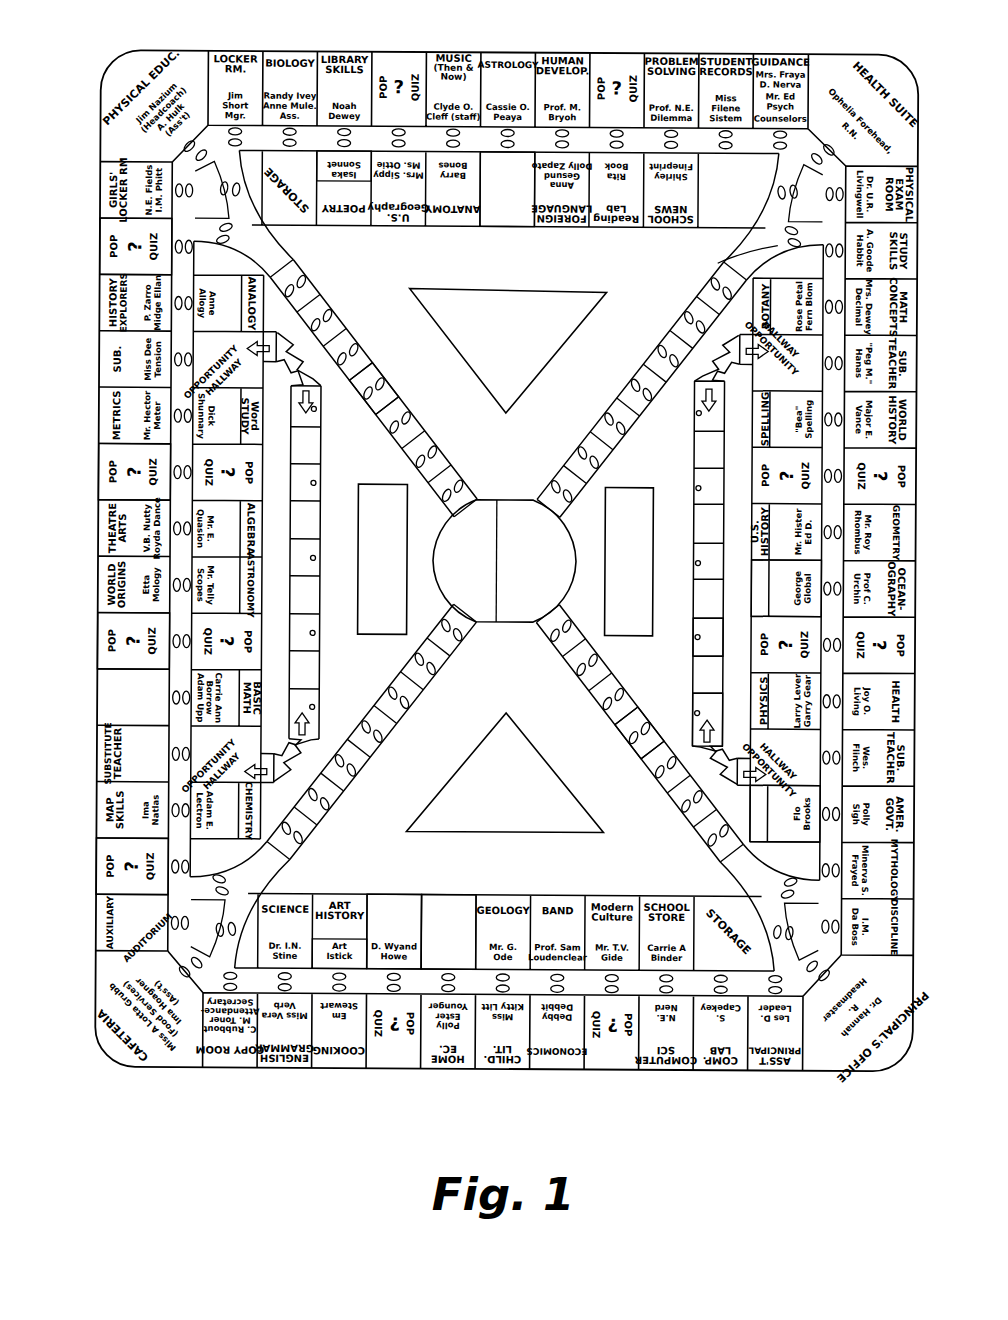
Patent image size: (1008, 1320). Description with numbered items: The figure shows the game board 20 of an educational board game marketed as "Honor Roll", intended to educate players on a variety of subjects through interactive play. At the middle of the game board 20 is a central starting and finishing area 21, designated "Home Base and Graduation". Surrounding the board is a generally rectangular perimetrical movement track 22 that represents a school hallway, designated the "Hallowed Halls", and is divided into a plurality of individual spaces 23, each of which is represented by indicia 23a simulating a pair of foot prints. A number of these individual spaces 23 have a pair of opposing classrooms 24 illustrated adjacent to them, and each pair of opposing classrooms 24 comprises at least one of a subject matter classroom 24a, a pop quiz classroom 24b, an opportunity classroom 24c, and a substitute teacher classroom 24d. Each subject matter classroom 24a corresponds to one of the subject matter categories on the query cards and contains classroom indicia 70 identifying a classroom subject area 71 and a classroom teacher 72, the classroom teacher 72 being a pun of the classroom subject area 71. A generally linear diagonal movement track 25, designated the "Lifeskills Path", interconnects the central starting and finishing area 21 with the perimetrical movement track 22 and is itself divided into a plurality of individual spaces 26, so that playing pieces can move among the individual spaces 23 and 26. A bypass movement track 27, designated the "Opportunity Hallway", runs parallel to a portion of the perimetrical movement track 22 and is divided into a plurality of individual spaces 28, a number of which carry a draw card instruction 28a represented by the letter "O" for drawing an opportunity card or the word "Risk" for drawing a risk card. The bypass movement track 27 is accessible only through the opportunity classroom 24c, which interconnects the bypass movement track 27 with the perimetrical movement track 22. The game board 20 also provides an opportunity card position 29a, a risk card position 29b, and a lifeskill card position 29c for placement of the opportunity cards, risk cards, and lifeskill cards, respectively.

The game board 20 is at (706, 48).
The central starting and finishing area 21 is at (514, 533).
The perimetrical movement track 22 is at (372, 958).
The individual spaces 23 is at (356, 152).
The indicia 23a is at (330, 160).
The pair of opposing classrooms 24 is at (140, 233).
The subject matter classroom 24a is at (750, 580).
The pop quiz classroom 24b is at (690, 642).
The opportunity classroom 24c is at (716, 262).
The substitute teacher classroom 24d is at (837, 785).
The diagonal movement track 25 is at (447, 452).
The individual spaces 26 is at (391, 397).
The bypass movement track 27 is at (318, 592).
The individual spaces 28 is at (315, 414).
The draw card instruction 28a is at (300, 598).
The opportunity card position 29a is at (495, 765).
The risk card position 29b is at (506, 400).
The lifeskill card position 29c is at (407, 568).
The classroom indicia 70 is at (137, 677).
The classroom subject area 71 is at (103, 678).
The classroom teacher 72 is at (130, 737).